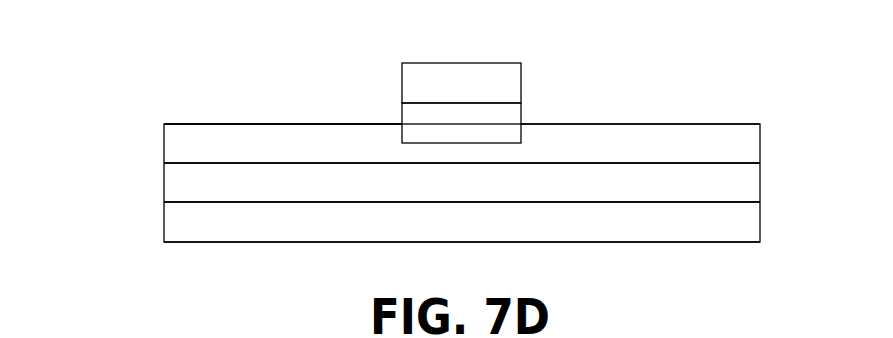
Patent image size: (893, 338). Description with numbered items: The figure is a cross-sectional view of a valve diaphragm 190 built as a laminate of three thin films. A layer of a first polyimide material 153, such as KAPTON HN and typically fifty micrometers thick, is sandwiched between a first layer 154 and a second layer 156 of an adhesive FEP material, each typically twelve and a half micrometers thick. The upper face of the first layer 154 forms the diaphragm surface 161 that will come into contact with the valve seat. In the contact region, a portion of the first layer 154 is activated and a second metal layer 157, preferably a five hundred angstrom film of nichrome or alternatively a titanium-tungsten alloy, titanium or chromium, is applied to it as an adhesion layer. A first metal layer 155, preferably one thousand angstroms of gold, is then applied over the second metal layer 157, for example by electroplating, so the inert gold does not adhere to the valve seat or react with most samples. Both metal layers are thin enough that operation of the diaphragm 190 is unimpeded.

The valve diaphragm 190 is at (92, 77).
The first layer 154 is at (164, 143).
The first polyimide material 153 is at (164, 182).
The second layer 156 is at (164, 222).
The diaphragm surface 161 is at (318, 124).
The second metal layer 157 is at (402, 111).
The first metal layer 155 is at (521, 83).